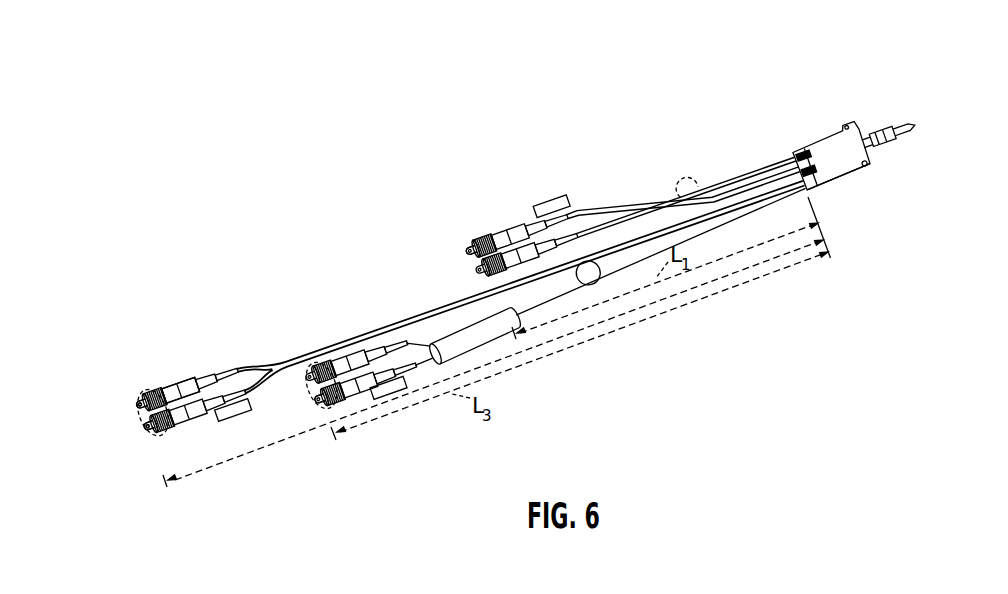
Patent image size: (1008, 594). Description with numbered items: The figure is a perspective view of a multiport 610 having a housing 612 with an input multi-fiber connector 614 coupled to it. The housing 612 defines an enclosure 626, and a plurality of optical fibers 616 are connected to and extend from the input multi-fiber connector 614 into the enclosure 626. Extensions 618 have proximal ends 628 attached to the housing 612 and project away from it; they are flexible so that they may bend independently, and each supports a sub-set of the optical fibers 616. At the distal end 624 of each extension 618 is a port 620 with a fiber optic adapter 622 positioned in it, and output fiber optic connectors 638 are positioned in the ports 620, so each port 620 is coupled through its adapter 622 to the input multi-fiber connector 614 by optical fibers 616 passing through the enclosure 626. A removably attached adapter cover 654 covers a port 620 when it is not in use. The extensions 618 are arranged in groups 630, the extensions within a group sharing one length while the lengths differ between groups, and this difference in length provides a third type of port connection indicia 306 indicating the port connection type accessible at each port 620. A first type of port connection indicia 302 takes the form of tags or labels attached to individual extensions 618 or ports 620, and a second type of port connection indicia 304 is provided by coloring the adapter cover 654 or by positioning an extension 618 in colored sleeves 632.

The multiport 610 is at (505, 108).
The housing 612 is at (820, 137).
The input multi-fiber connector 614 is at (897, 126).
The optical fibers 616 is at (652, 210).
The extensions 618 is at (342, 340).
The ports 620 is at (148, 399).
The fiber optic adapters 622 is at (133, 378).
The distal end 624 is at (469, 252).
The enclosure 626 is at (849, 196).
The proximal ends 628 is at (794, 152).
The groups 630 is at (693, 173).
The colored sleeves 632 is at (484, 337).
The output fiber optic connectors 638 is at (177, 383).
The adapter cover 654 is at (147, 424).
The first type of port connection indicia 302 is at (566, 199).
The second type of port connection indicia 304 is at (513, 230).
The third type of port connection indicia 306 is at (481, 438).